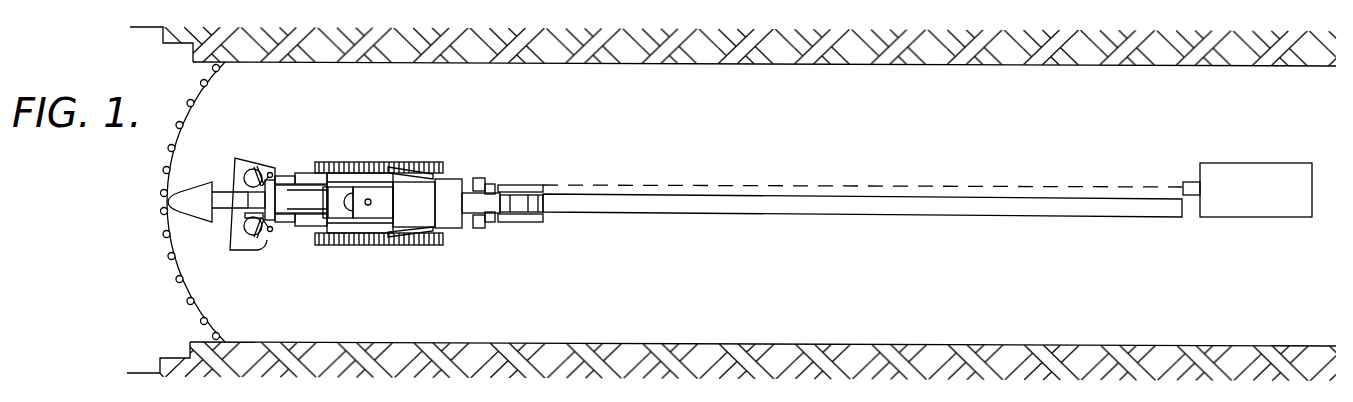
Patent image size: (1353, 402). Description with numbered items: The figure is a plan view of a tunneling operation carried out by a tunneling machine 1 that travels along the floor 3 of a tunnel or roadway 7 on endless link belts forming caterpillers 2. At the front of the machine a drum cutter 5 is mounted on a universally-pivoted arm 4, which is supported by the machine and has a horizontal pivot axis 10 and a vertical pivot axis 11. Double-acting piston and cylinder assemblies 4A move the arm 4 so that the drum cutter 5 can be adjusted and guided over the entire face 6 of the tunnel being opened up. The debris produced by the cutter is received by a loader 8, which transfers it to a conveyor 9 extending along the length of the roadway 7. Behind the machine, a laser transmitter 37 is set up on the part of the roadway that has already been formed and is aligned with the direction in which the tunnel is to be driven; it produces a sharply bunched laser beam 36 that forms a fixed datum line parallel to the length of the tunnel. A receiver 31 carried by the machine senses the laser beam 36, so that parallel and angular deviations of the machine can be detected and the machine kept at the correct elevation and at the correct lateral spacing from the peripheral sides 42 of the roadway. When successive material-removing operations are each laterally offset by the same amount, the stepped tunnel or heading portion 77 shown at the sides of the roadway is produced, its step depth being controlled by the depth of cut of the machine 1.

The tunneling machine 1 is at (421, 218).
The caterpillers 2 is at (386, 162).
The floor 3 is at (854, 294).
The universally-pivoted arm 4 is at (263, 208).
The double-acting piston and cylinder assemblies 4A is at (293, 170).
The drum cutter 5 is at (201, 185).
The face 6 is at (193, 115).
The roadway 7 is at (779, 134).
The loader 8 is at (257, 243).
The conveyor 9 is at (760, 213).
The horizontal pivot axis 10 is at (344, 161).
The vertical pivot axis 11 is at (370, 205).
The receiver 31 is at (451, 218).
The laser beam 36 is at (858, 185).
The laser transmitter 37 is at (1272, 198).
The peripheral sides 42 is at (629, 66).
The stepped tunnel or heading portion 77 is at (148, 28).